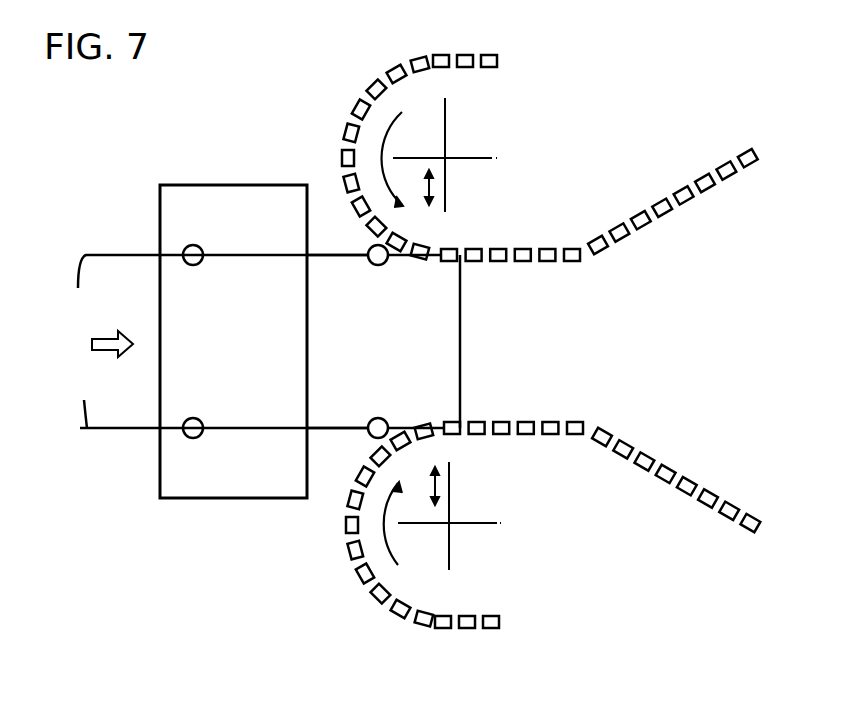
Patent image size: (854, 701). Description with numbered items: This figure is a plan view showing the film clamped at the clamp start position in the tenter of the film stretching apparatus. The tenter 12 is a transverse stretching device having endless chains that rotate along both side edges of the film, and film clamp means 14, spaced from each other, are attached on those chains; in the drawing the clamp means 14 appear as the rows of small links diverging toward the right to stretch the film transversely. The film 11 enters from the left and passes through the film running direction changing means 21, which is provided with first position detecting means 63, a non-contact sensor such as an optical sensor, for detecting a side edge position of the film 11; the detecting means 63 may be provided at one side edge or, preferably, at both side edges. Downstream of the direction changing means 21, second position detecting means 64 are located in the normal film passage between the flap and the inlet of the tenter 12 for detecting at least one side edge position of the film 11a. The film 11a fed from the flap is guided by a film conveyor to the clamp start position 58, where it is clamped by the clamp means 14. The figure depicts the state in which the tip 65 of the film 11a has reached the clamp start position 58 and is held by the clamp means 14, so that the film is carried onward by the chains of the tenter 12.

The film 11 is at (110, 403).
The film 11a is at (415, 332).
The tenter 12 is at (522, 158).
The film clamp means 14 is at (550, 248).
The film running direction changing means 21 is at (178, 499).
The clamp start position 58 is at (460, 252).
The first position detecting means 63 is at (196, 245).
The second position detecting means 64 is at (370, 247).
The tip 65 is at (460, 347).